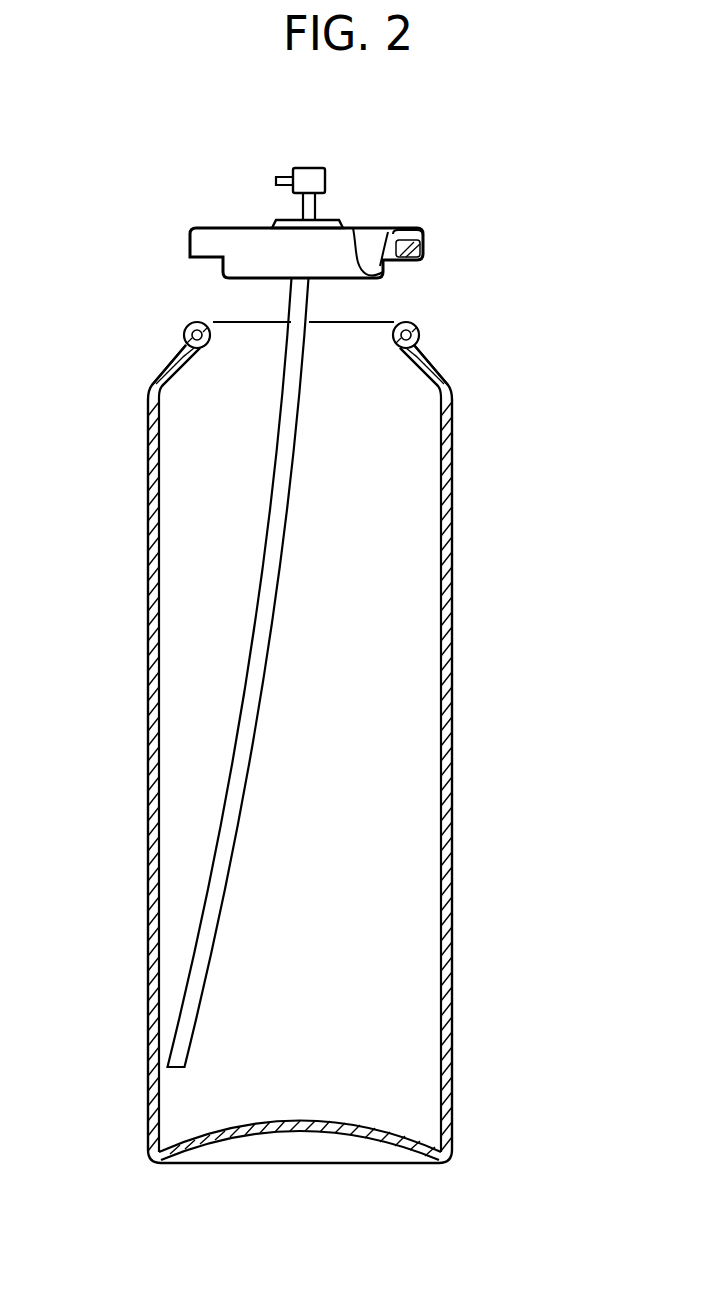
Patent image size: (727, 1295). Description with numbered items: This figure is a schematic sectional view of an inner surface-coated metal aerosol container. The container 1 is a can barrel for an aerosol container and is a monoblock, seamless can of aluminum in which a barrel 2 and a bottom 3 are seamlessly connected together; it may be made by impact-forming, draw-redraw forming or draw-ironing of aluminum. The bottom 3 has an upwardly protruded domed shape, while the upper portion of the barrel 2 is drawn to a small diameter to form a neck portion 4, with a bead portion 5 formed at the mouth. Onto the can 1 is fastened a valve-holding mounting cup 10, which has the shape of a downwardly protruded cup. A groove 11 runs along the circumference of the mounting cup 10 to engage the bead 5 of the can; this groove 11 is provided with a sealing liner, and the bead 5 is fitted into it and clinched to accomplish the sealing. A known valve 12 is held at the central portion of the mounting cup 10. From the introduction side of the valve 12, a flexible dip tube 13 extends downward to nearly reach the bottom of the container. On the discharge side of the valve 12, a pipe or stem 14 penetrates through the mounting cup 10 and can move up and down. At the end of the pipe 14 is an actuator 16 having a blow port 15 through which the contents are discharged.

The container 1 is at (524, 604).
The barrel 2 is at (453, 802).
The bottom 3 is at (360, 1132).
The neck portion 4 is at (429, 351).
The bead portion 5 is at (417, 324).
The valve-holding mounting cup 10 is at (150, 202).
The groove 11 is at (407, 248).
The valve 12 is at (340, 220).
The flexible dip tube 13 is at (263, 670).
The pipe (stem) 14 is at (320, 207).
The blow port 15 is at (278, 176).
The actuator 16 is at (311, 168).